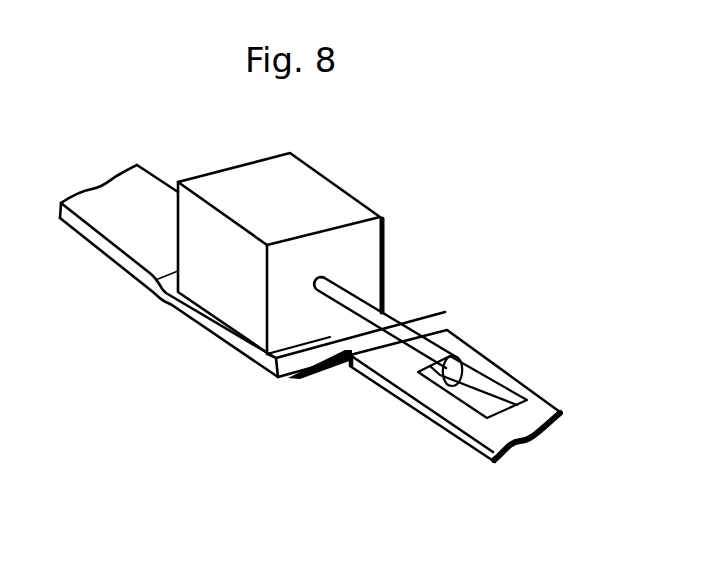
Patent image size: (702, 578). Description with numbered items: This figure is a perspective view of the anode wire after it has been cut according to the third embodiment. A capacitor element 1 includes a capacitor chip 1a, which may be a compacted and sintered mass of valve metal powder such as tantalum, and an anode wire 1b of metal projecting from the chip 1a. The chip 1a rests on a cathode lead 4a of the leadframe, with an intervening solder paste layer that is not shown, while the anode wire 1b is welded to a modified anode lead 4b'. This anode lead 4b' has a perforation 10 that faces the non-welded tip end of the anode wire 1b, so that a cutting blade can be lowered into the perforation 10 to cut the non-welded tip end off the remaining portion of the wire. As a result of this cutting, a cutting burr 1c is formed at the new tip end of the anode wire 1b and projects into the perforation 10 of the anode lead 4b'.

The capacitor element 1 is at (366, 252).
The capacitor chip 1a is at (306, 182).
The anode wire 1b is at (393, 328).
The cutting burr 1c is at (447, 361).
The cathode lead 4a is at (113, 247).
The modified anode lead 4b' is at (474, 410).
The perforation 10 is at (497, 404).